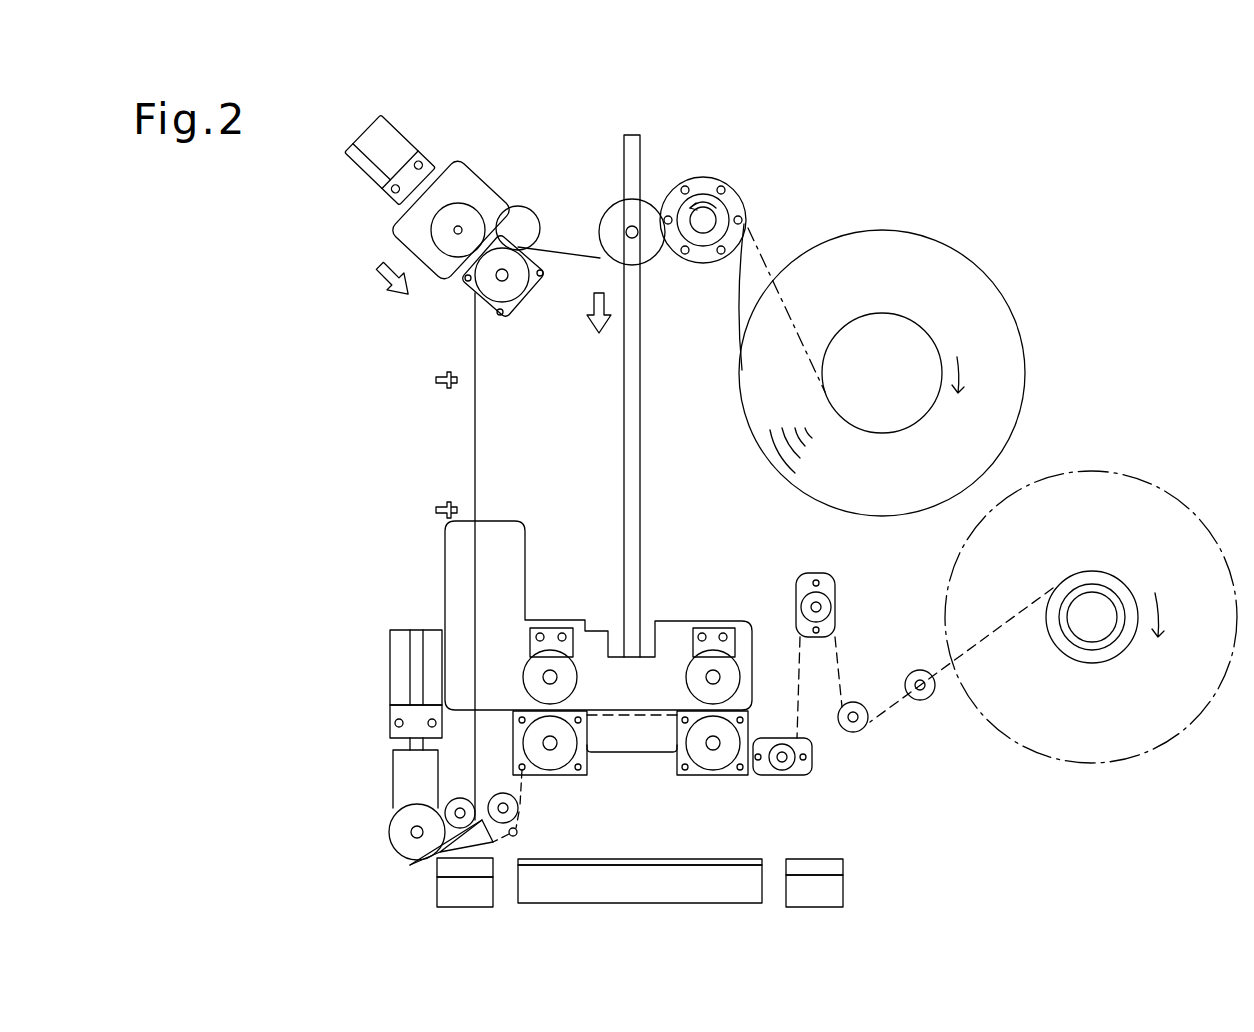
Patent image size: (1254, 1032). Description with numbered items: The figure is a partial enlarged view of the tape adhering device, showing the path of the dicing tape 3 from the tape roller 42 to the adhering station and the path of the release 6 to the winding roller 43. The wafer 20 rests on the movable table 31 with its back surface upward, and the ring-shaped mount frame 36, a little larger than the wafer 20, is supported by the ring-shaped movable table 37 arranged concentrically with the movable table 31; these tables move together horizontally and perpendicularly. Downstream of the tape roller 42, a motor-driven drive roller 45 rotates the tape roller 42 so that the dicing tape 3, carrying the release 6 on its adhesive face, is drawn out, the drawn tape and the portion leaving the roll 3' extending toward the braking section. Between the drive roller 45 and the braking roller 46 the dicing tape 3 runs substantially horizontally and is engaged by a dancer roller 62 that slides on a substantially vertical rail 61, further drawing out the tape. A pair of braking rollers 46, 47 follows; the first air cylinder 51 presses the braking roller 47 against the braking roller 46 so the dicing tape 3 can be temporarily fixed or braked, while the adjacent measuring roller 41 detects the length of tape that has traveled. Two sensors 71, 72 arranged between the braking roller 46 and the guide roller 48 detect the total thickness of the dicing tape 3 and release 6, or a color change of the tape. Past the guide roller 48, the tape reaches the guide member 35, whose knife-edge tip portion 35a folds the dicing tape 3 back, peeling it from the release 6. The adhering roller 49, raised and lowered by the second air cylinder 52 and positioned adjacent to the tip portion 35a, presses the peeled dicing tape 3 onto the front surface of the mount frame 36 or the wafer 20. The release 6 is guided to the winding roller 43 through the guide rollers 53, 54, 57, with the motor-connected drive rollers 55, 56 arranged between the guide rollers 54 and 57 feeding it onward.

The dicing tape 3 is at (577, 544).
The used tape path 3' is at (786, 297).
The release 6 is at (890, 717).
The wafer 20 is at (642, 859).
The movable table 31 is at (640, 890).
The guide member 35 is at (484, 818).
The tip portion 35a is at (412, 864).
The mount frame 36 is at (445, 867).
The ring-shaped movable table 37 is at (462, 895).
The measuring roller 41 is at (523, 223).
The tape roller 42 is at (993, 287).
The winding roller 43 is at (1120, 592).
The drive roller 45 is at (735, 190).
The braking roller 46 is at (513, 287).
The braking roller 47 is at (440, 232).
The guide roller 48 is at (458, 800).
The adhering roller 49 is at (400, 826).
The first air cylinder 51 is at (377, 157).
The second air cylinder 52 is at (398, 655).
The guide roller 53 is at (517, 832).
The guide roller 54 is at (515, 808).
The drive roller 55 is at (562, 748).
The drive roller 56 is at (722, 758).
The guide roller 57 is at (787, 764).
The rail 61 is at (636, 558).
The dancer roller 62 is at (645, 250).
The sensor 71 is at (435, 380).
The sensor 72 is at (435, 510).